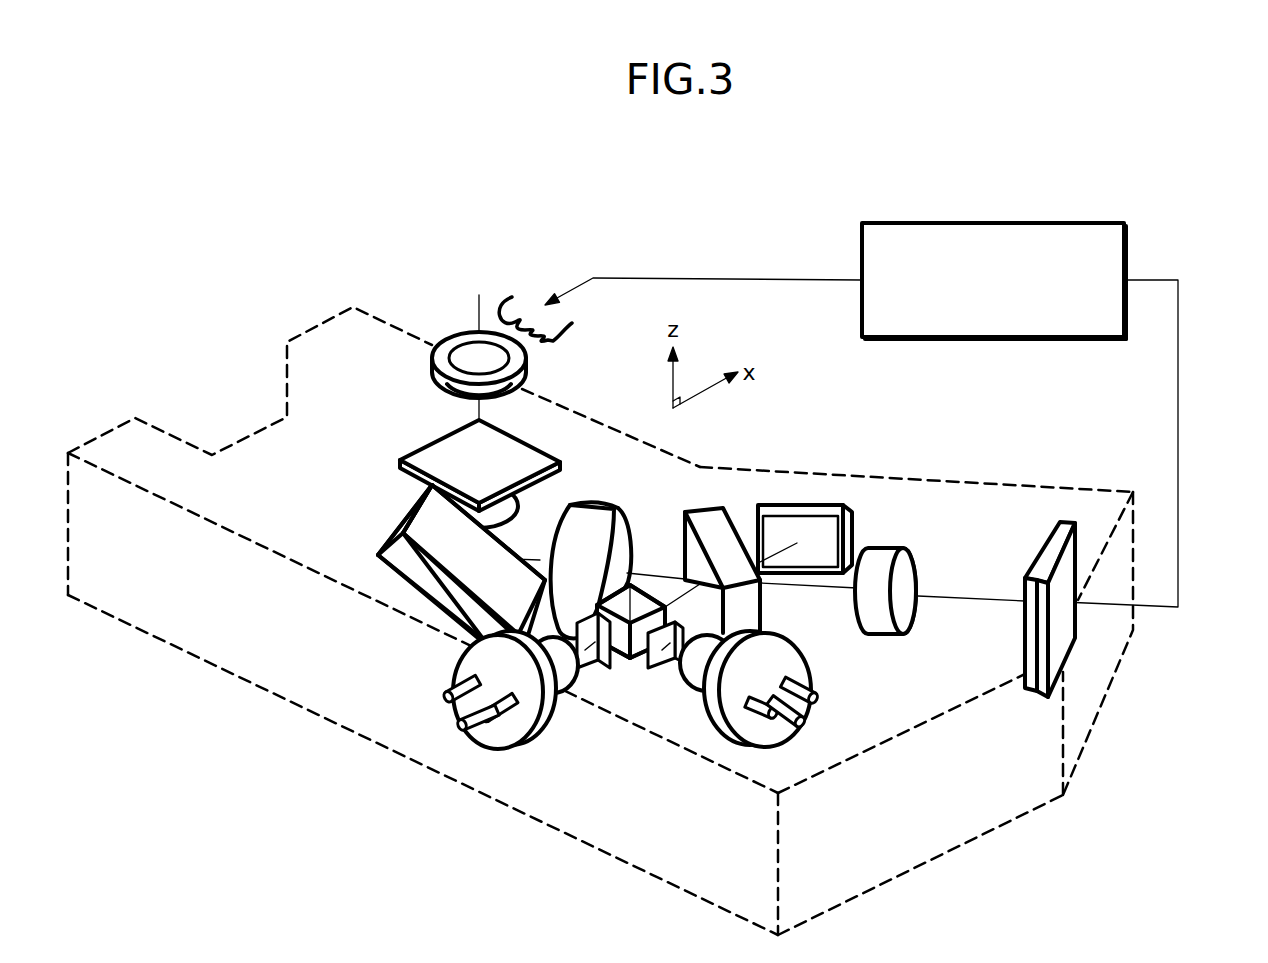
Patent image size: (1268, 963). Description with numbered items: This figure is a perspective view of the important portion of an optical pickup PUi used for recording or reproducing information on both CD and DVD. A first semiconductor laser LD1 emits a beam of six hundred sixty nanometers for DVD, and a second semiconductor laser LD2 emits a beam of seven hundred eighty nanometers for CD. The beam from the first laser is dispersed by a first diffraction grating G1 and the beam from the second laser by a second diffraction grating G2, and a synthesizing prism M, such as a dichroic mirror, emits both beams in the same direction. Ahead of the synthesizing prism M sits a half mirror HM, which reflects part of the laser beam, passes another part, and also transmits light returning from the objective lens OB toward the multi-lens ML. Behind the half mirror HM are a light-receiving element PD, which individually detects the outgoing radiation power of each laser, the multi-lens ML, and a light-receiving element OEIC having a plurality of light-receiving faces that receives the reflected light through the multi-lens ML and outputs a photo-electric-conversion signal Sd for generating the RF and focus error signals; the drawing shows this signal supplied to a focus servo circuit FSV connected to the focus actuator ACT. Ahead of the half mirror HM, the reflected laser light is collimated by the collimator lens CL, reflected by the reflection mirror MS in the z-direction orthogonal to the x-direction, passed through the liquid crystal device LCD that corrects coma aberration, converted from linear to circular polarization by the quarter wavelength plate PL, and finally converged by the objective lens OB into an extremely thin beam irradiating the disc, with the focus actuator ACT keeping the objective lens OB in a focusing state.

The optical pickup PUi is at (388, 296).
The focus actuator ACT is at (512, 297).
The objective lens OB is at (528, 365).
The 1/4 wavelength plate PL is at (440, 453).
The liquid crystal device LCD is at (500, 500).
The reflection mirror MS is at (422, 585).
The collimator lens CL is at (602, 513).
The synthesizing prism M is at (638, 667).
The first diffraction grating G1 is at (597, 668).
The second diffraction grating G2 is at (670, 672).
The first semiconductor laser LD1 is at (520, 725).
The second semiconductor laser LD2 is at (798, 667).
The half mirror HM is at (717, 528).
The light-receiving element PD is at (857, 520).
The multi-lens ML is at (887, 553).
The light-receiving element OEIC is at (1043, 550).
The focus servo circuit FSV is at (1050, 222).
The photo-electric-conversion signal Sd is at (1178, 512).